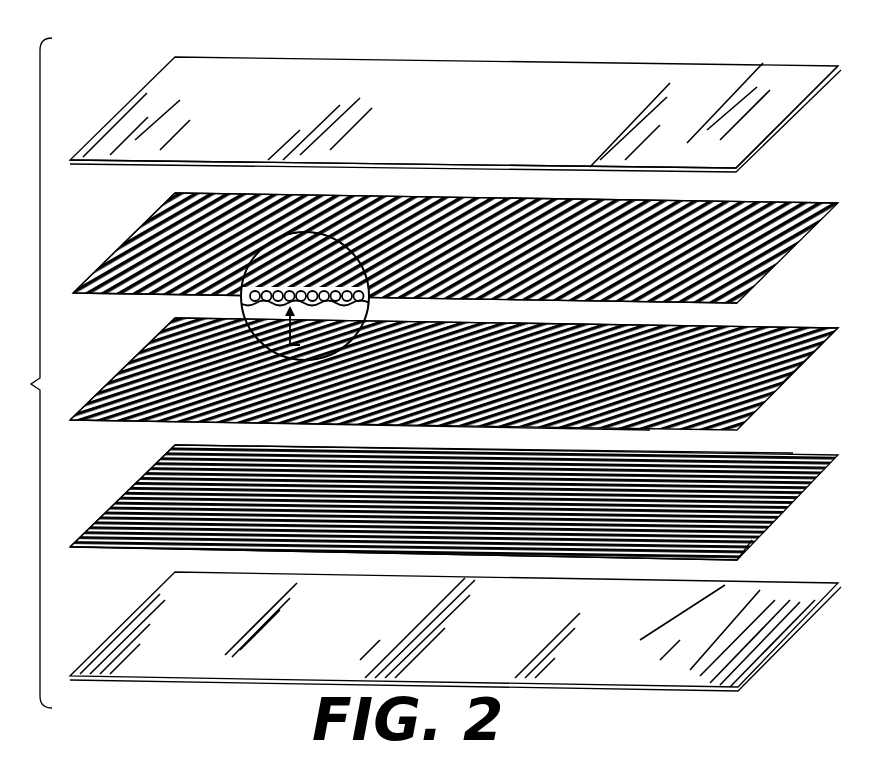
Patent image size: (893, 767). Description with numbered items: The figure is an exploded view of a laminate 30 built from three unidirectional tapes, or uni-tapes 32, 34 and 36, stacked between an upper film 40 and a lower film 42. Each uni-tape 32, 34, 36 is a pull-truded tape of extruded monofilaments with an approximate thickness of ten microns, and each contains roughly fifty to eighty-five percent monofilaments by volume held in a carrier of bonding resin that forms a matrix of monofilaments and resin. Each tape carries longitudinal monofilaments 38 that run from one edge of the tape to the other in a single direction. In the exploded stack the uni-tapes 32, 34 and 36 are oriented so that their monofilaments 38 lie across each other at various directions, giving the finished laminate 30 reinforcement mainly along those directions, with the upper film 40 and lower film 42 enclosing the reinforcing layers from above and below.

The laminate 30 is at (30, 373).
The uni-tape 32 is at (133, 237).
The uni-tape 34 is at (135, 358).
The uni-tape 36 is at (128, 490).
The longitudinal monofilaments 38 is at (754, 255).
The upper film 40 is at (556, 86).
The lower film 42 is at (745, 605).